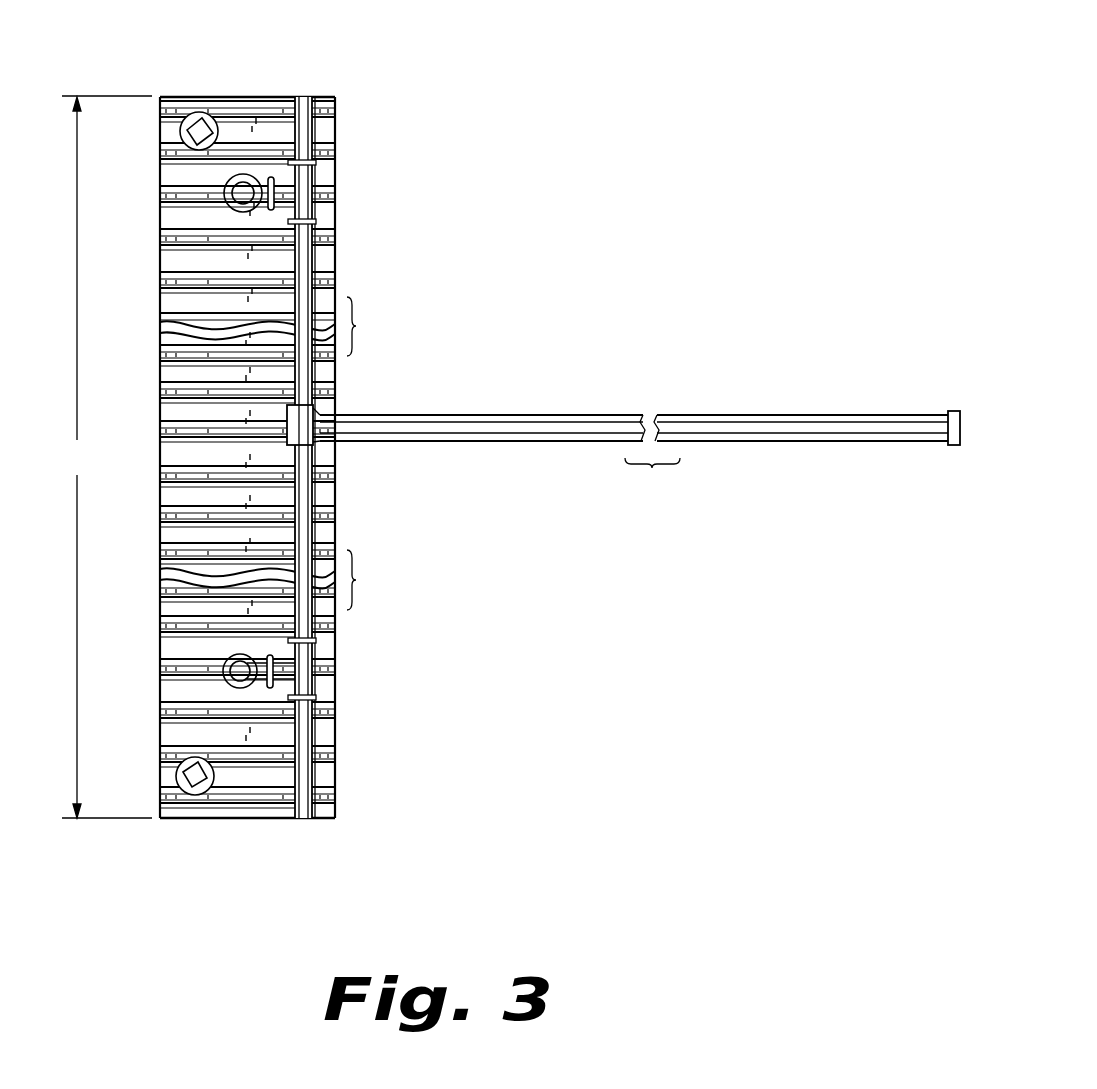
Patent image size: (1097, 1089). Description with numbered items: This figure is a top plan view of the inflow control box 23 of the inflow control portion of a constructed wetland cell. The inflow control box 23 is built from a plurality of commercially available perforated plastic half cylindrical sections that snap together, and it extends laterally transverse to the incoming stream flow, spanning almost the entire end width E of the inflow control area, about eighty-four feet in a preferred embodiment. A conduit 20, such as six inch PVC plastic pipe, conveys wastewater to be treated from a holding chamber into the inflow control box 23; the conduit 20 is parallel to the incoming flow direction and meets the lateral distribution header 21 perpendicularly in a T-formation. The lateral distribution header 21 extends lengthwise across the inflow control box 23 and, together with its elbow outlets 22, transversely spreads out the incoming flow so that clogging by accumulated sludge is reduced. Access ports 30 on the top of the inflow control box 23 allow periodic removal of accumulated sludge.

The conduit 20 is at (733, 428).
The lateral distribution header 21 is at (303, 499).
The elbow outlets 22 is at (250, 176).
The inflow control box 23 is at (166, 456).
The access ports 30 is at (190, 113).
The end width E is at (107, 457).